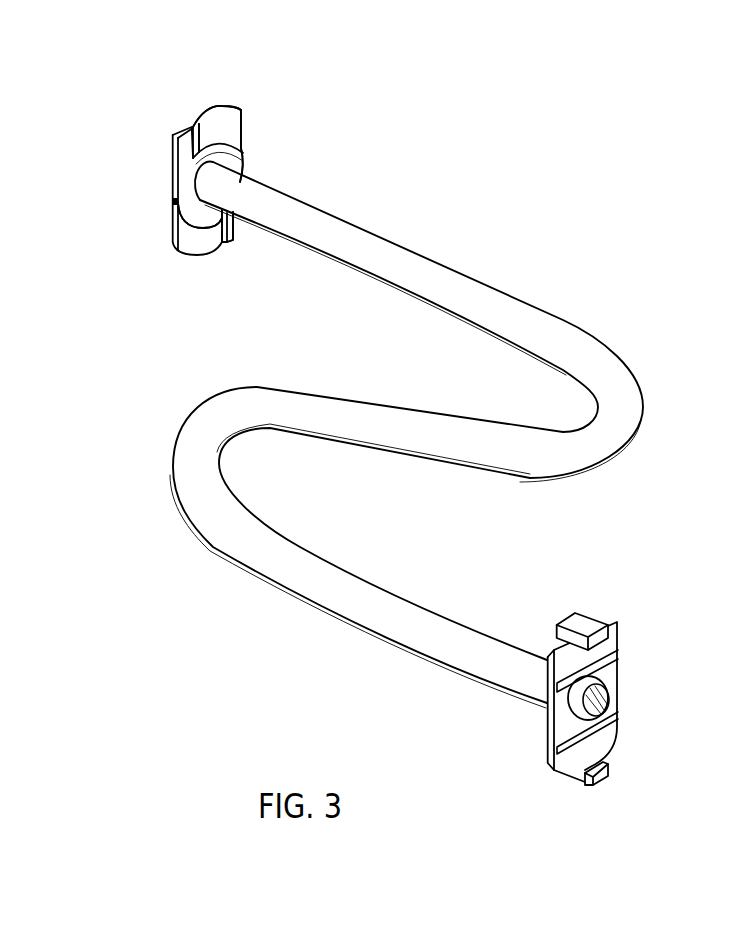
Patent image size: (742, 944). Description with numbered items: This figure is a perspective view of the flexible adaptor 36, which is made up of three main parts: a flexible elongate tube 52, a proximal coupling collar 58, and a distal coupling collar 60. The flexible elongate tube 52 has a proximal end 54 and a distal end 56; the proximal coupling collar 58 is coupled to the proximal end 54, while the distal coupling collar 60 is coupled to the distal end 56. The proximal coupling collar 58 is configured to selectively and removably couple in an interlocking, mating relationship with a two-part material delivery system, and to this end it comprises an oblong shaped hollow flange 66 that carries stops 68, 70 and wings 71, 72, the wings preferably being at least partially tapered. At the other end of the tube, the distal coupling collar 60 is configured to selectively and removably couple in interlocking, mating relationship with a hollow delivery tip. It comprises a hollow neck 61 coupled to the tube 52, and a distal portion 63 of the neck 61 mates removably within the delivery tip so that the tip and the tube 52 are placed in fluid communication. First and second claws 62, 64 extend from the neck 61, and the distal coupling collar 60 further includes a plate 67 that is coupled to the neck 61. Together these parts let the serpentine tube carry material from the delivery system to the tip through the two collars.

The flexible adaptor 36 is at (620, 322).
The flexible elongate tube 52 is at (340, 583).
The proximal end 54 is at (263, 168).
The distal end 56 is at (527, 640).
The proximal coupling collar 58 is at (145, 182).
The distal coupling collar 60 is at (667, 643).
The hollow neck 61 is at (580, 685).
The first claw 62 is at (583, 783).
The distal portion 63 is at (610, 692).
The second claw 64 is at (583, 625).
The oblong shaped hollow flange 66 is at (223, 105).
The plate 67 is at (563, 713).
The stop 68 is at (238, 227).
The stop 70 is at (190, 150).
The wing 71 is at (237, 127).
The wing 72 is at (185, 240).